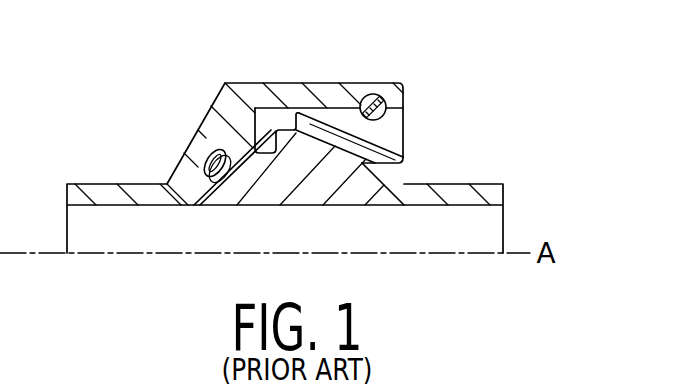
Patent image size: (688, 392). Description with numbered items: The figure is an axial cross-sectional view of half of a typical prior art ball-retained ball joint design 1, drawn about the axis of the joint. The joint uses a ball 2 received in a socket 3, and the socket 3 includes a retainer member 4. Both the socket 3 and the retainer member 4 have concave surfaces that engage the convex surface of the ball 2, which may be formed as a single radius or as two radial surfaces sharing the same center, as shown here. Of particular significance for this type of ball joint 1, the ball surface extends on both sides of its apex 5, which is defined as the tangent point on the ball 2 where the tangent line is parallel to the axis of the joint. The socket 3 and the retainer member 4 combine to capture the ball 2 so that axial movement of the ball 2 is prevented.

The ball joint design 1 is at (540, 105).
The ball 2 is at (328, 183).
The socket 3 is at (253, 92).
The retainer member 4 is at (390, 130).
The apex 5 is at (276, 128).